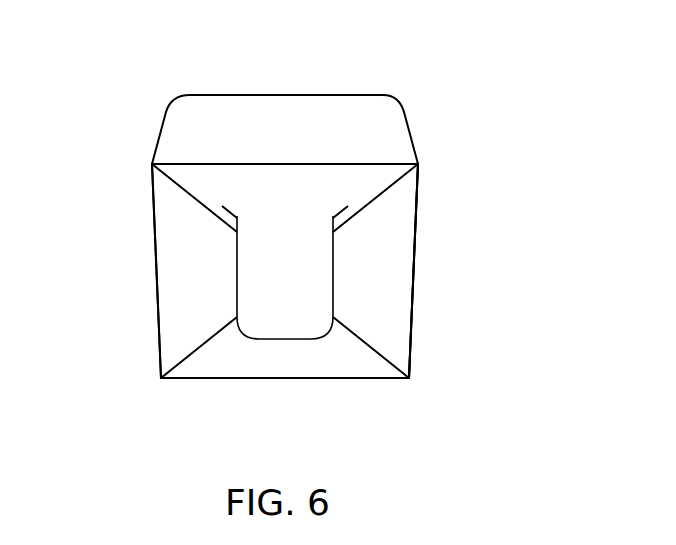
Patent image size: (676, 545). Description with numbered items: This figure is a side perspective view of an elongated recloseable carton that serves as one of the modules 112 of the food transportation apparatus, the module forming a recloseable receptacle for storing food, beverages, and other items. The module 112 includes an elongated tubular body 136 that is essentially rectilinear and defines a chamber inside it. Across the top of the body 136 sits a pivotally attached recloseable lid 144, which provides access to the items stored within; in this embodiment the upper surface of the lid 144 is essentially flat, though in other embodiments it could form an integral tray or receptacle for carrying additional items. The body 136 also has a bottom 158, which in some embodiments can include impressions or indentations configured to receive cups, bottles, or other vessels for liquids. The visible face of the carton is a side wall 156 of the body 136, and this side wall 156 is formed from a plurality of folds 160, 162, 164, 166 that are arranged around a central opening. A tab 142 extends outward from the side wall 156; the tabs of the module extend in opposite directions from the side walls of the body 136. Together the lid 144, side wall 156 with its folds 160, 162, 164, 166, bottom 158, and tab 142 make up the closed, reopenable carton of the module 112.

The module 112 is at (320, 72).
The recloseable lid 144 is at (175, 115).
The elongated tubular body 136 is at (418, 147).
The fold 160 is at (307, 205).
The tab 142 is at (258, 253).
The fold 164 is at (212, 305).
The fold 162 is at (404, 288).
The side wall 156 is at (415, 272).
The bottom 158 is at (210, 360).
The fold 166 is at (316, 360).